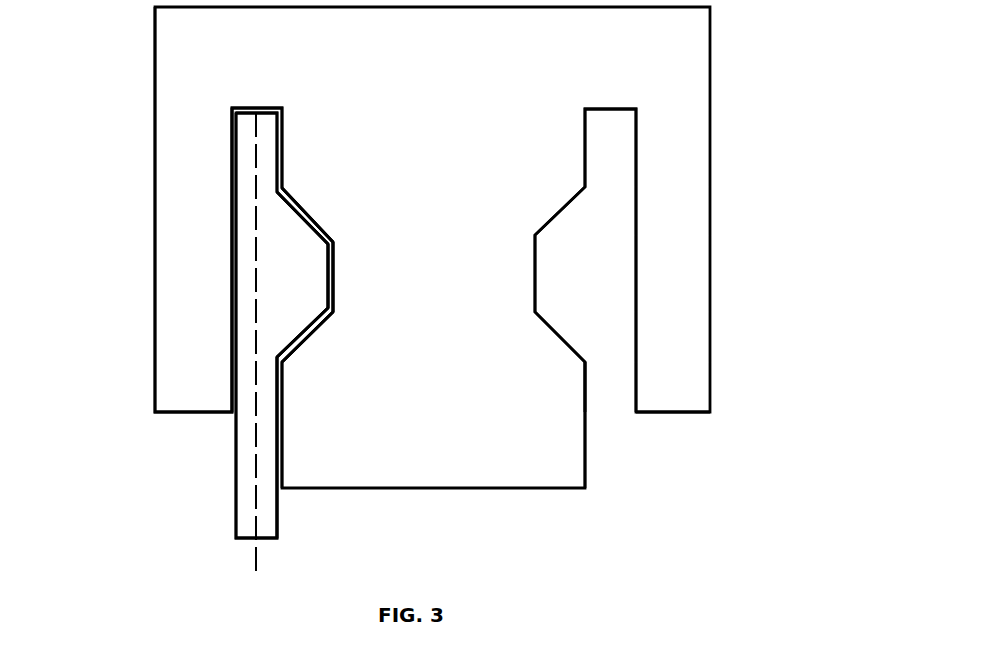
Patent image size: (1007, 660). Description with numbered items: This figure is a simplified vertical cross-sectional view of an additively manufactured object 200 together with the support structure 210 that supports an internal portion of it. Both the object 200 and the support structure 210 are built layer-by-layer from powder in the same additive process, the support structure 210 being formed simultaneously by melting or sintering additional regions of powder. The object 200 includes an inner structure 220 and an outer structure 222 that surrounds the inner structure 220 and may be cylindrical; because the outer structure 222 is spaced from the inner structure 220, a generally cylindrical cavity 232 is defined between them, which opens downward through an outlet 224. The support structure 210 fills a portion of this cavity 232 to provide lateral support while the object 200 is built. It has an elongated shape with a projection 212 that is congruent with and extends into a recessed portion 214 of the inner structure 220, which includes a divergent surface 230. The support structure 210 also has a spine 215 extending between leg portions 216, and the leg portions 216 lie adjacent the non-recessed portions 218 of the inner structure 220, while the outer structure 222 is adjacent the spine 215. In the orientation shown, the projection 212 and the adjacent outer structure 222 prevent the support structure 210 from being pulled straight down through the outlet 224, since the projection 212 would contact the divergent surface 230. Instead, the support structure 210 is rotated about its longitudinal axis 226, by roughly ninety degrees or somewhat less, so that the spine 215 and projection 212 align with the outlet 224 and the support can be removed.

The object 200 is at (150, 39).
The support structure 210 is at (222, 232).
The projection 212 is at (313, 280).
The recessed portion 214 is at (305, 207).
The spine 215 is at (242, 302).
The leg portions 216 is at (248, 145).
The non-recessed portion 218 is at (282, 142).
The inner structure 220 is at (420, 490).
The outer structure 222 is at (155, 322).
The outlet 224 is at (605, 398).
The longitudinal axis 226 is at (257, 558).
The divergent surface 230 is at (308, 333).
The cavity 232 is at (614, 202).